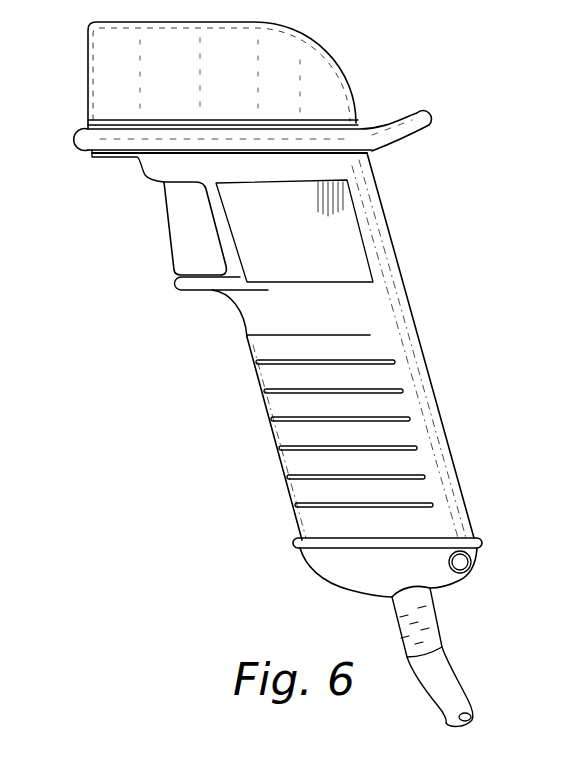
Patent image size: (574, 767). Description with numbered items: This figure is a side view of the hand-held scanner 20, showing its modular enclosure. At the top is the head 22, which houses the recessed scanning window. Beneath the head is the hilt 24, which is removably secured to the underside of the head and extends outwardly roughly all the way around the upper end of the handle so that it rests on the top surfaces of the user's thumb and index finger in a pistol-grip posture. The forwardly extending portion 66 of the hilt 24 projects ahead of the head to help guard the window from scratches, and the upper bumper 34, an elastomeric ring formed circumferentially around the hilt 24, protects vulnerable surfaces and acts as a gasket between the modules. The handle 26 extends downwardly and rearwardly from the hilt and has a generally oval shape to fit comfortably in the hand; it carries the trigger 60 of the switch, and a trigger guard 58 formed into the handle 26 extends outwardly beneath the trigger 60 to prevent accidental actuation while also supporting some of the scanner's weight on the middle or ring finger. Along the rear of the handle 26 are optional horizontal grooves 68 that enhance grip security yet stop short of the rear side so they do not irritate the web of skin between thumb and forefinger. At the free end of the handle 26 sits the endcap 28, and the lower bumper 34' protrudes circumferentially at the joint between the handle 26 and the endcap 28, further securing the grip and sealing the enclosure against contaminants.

The hand-scanner 20 is at (173, 437).
The head 22 is at (305, 45).
The hilt 24 is at (372, 158).
The handle 26 is at (420, 324).
The endcap 28 is at (333, 582).
The upper bumper 34 is at (294, 129).
The lower bumper 34' is at (423, 532).
The trigger guard 58 is at (176, 292).
The trigger 60 is at (166, 217).
The forwardly extending portion 66 is at (78, 149).
The grooves 68 is at (258, 392).